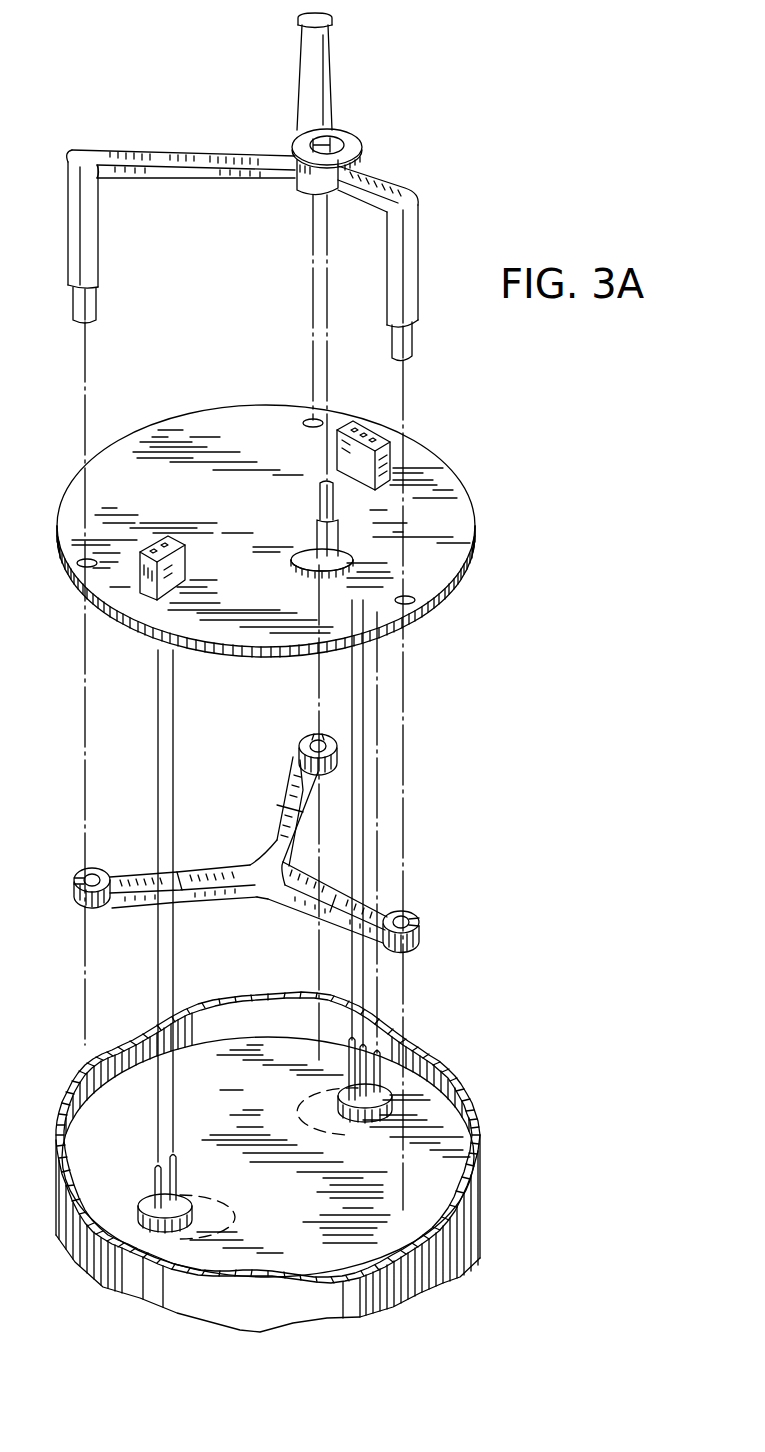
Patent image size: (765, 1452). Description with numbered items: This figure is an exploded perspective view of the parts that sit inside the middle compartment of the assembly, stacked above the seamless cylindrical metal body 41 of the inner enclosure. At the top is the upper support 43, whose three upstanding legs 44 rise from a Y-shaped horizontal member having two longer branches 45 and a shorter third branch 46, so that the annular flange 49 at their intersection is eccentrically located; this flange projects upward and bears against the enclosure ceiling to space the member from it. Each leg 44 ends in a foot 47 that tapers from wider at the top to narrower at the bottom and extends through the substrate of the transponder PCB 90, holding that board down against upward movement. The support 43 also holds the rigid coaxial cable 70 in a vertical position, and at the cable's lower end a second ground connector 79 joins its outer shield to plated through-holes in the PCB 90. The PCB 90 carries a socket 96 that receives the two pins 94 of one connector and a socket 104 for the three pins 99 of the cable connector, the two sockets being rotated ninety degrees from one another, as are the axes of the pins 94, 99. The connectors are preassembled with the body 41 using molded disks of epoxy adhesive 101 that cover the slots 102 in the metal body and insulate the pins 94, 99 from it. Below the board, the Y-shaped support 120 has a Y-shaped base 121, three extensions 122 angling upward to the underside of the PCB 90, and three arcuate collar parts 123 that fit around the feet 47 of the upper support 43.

The cylindrical body 41 is at (430, 1170).
The support 43 is at (276, 187).
The legs 44 is at (103, 255).
The branches 45 is at (298, 112).
The third branch 46 is at (397, 185).
The feet 47 is at (98, 312).
The annular flange 49 is at (364, 152).
The coaxial cable 70 is at (317, 497).
The second ground connector 79 is at (338, 532).
The transponder PCB 90 is at (465, 543).
The pins 94 is at (182, 1172).
The socket 96 is at (183, 560).
The pins 99 is at (387, 1072).
The epoxy adhesive disks 101 is at (193, 1198).
The slots 102 is at (243, 1222).
The socket 104 is at (388, 453).
The Y-shaped support 120 is at (247, 831).
The Y-shaped base 121 is at (250, 876).
The extensions 122 is at (163, 873).
The arcuate collar parts 123 is at (300, 748).